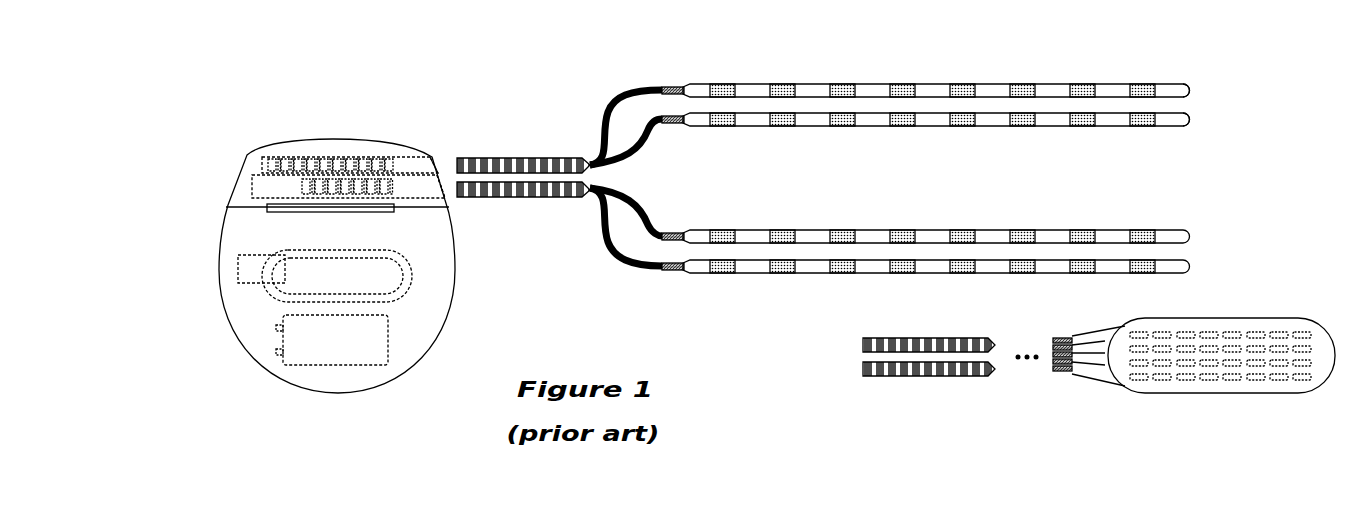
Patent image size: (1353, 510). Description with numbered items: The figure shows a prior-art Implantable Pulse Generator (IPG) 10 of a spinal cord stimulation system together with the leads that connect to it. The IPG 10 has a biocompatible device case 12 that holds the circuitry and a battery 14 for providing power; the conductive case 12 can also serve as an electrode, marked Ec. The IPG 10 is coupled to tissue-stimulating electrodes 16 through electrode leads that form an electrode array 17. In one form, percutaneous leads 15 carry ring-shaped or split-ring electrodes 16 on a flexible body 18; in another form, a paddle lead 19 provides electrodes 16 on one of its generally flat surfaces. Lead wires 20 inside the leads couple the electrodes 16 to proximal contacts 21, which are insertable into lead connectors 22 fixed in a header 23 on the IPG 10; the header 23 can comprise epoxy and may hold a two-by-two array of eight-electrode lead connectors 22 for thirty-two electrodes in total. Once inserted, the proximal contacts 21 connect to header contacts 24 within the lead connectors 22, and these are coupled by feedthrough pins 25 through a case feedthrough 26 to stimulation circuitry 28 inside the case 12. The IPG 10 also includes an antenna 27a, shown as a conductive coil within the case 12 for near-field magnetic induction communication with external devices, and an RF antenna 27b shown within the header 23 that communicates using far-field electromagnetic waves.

The Implantable Pulse Generator 10 is at (285, 97).
The device case 12 is at (455, 308).
The battery 14 is at (323, 350).
The percutaneous lead 15 is at (1192, 120).
The electrodes 16 is at (848, 84).
The electrode array 17 is at (943, 151).
The flexible body 18 is at (768, 84).
The paddle lead 19 is at (1185, 318).
The lead wires 20 is at (610, 82).
The proximal contacts 21 is at (529, 138).
The lead connectors 22 is at (460, 217).
The header 23 is at (368, 142).
The header contacts 24 is at (280, 160).
The feedthrough pins 25 is at (384, 175).
The case feedthrough 26 is at (280, 212).
The antenna 27a is at (412, 290).
The RF antenna 27b is at (258, 170).
The stimulation circuitry 28 is at (238, 258).